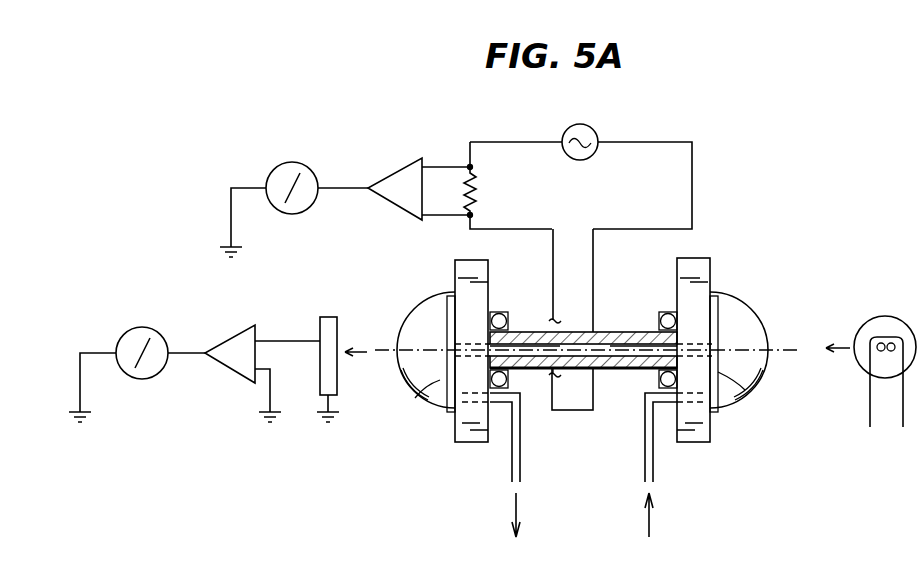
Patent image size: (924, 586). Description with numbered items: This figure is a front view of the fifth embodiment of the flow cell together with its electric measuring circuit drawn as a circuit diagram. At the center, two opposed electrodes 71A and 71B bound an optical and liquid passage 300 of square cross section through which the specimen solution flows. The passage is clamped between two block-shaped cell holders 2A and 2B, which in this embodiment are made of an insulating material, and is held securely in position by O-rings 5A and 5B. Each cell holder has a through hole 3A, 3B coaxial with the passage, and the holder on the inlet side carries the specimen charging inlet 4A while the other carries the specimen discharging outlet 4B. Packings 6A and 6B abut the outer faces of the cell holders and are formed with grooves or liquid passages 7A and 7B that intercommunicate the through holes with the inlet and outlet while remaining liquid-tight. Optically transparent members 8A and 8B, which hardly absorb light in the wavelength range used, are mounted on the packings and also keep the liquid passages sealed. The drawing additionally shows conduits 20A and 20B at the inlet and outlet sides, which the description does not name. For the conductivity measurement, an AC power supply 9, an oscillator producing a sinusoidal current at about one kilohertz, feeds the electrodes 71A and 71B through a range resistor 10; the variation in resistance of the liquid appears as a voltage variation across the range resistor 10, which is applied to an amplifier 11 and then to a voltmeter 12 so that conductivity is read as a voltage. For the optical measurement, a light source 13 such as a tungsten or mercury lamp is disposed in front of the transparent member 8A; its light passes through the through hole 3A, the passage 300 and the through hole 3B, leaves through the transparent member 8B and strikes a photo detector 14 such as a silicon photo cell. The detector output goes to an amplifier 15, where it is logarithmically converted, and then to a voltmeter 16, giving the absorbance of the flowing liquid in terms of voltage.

The AC power supply 9 is at (593, 130).
The range resistor 10 is at (473, 188).
The amplifier 11 is at (398, 171).
The voltmeter 12 is at (304, 164).
The light source 13 is at (905, 316).
The photo detector 14 is at (328, 317).
The amplifier 15 is at (236, 327).
The voltmeter 16 is at (158, 330).
The cell holder 2A is at (695, 258).
The cell holder 2B is at (460, 260).
The through hole 3A is at (715, 333).
The through hole 3B is at (470, 345).
The specimen charging inlet 4A is at (700, 420).
The specimen discharging outlet 4B is at (462, 418).
The O-ring 5A is at (661, 312).
The O-ring 5B is at (498, 312).
The packing 6A is at (718, 296).
The packing 6B is at (450, 296).
The groove or liquid passage 7A is at (745, 385).
The groove or liquid passage 7B is at (420, 400).
The optically transparent member 8A is at (748, 310).
The optically transparent member 8B is at (420, 308).
The inlet pipe 20A is at (652, 470).
The outlet pipe 20B is at (512, 470).
The electrode 71A is at (607, 332).
The electrode 71B is at (612, 368).
The optical and liquid passage 300 is at (533, 368).